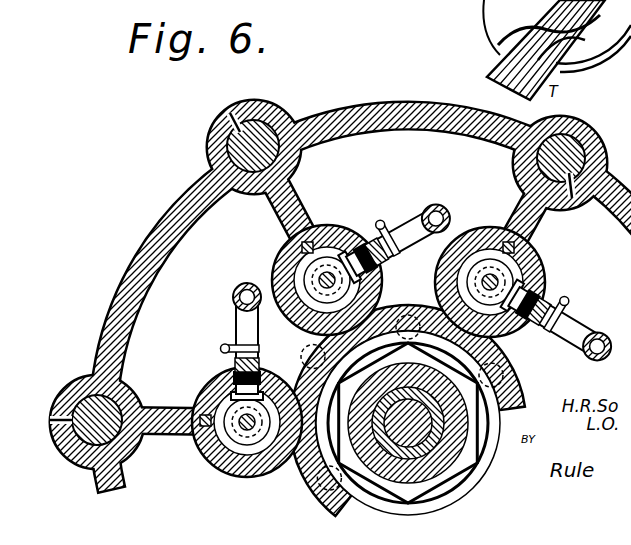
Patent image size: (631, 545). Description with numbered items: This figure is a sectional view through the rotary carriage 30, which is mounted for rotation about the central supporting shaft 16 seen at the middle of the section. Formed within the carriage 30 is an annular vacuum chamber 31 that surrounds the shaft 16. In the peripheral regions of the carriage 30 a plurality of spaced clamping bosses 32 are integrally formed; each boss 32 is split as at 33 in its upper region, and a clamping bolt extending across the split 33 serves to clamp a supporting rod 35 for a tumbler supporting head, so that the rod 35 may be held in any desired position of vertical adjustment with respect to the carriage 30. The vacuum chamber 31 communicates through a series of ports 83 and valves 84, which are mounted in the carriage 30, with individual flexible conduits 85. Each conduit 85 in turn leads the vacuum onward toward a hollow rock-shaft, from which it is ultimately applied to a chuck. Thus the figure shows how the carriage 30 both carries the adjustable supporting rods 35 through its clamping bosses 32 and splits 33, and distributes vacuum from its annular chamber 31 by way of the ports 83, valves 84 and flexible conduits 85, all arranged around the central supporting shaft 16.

The central supporting shaft 16 is at (317, 382).
The rotary carriage 30 is at (368, 100).
The annular vacuum chamber 31 is at (467, 350).
The clamping boss 32 is at (273, 113).
The split 33 is at (236, 114).
The supporting rod 35 is at (243, 143).
The port 83 is at (424, 303).
The valve 84 is at (335, 247).
The flexible conduit 85 is at (436, 207).